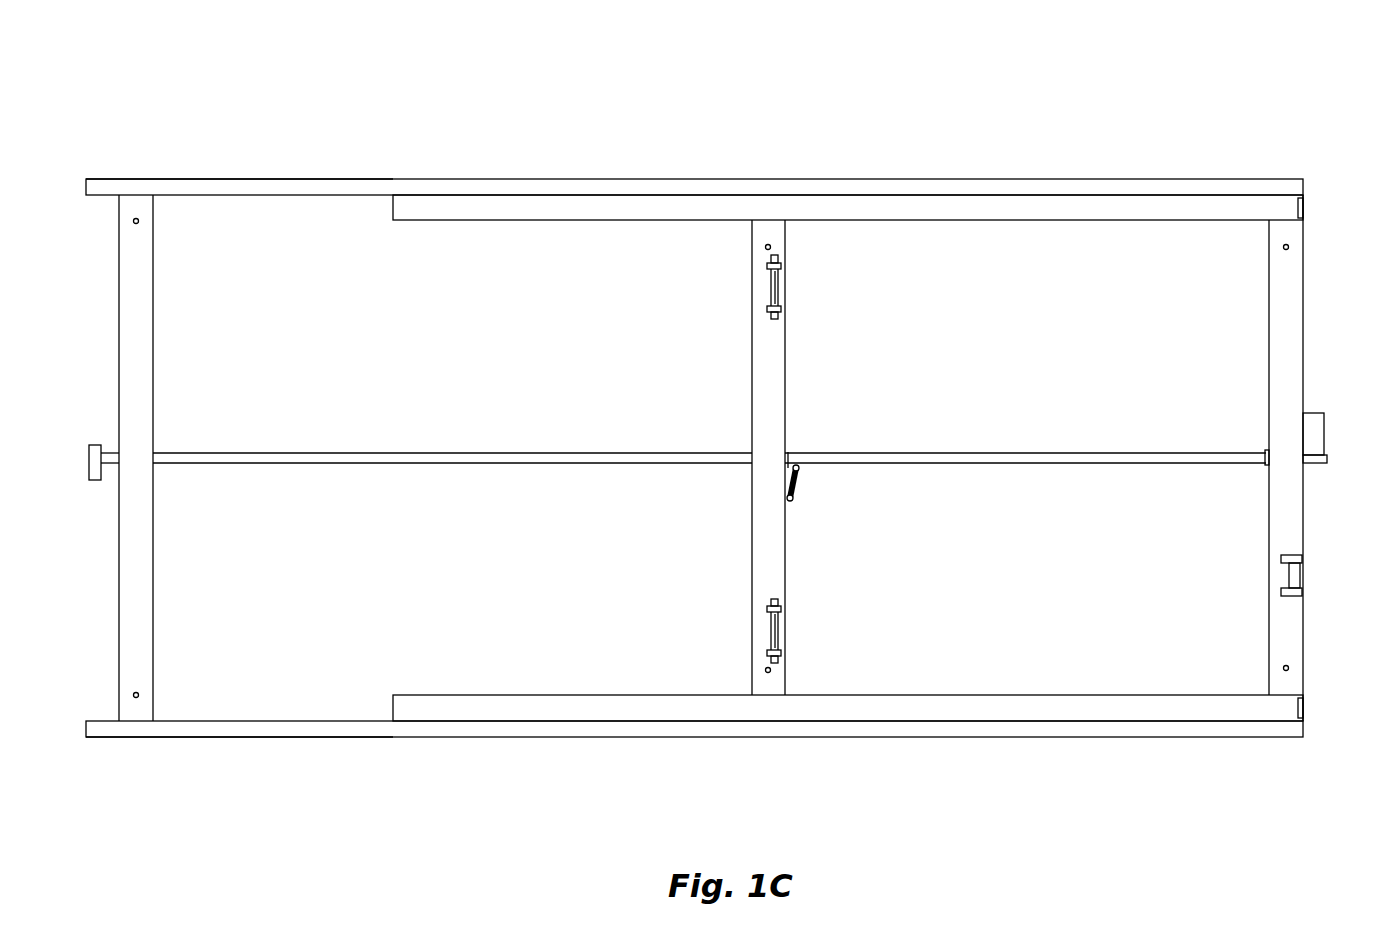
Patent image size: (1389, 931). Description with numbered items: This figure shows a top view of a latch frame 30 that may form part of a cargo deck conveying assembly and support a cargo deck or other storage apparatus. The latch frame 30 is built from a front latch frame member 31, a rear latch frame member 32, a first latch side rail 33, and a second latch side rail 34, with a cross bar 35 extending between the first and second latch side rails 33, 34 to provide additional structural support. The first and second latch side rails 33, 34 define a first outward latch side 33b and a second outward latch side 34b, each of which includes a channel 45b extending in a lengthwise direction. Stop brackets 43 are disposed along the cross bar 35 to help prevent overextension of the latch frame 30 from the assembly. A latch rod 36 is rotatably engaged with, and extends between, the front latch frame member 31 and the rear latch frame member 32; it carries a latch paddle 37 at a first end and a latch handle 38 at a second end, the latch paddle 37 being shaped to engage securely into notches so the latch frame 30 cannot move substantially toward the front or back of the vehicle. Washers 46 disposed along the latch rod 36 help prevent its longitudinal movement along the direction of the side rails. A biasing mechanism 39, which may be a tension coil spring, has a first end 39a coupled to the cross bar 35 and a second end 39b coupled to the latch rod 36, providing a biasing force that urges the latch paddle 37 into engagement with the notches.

The latch frame 30 is at (1168, 71).
The front latch frame member 31 is at (1292, 282).
The rear latch frame member 32 is at (137, 307).
The first latch side rail 33 is at (792, 186).
The first outward latch side 33b is at (927, 179).
The second latch side rail 34 is at (792, 731).
The second outward latch side 34b is at (927, 737).
The cross bar 35 is at (773, 356).
The latch rod 36 is at (957, 452).
The latch paddle 37 is at (1317, 413).
The latch handle 38 is at (88, 455).
The biasing mechanism 39 is at (829, 502).
The first end 39a is at (791, 502).
The second end 39b is at (800, 467).
The stop bracket 43 is at (775, 278).
The channel 45b is at (308, 179).
The washer 46 is at (786, 452).